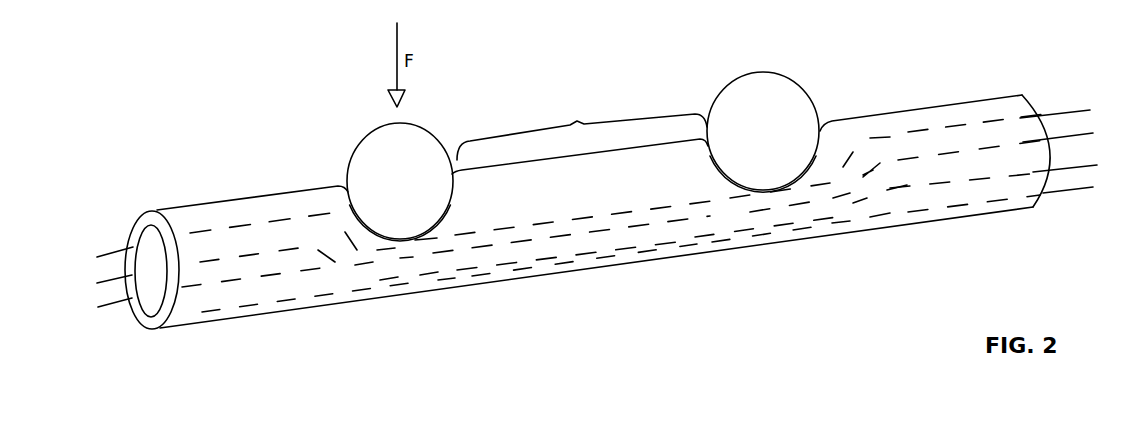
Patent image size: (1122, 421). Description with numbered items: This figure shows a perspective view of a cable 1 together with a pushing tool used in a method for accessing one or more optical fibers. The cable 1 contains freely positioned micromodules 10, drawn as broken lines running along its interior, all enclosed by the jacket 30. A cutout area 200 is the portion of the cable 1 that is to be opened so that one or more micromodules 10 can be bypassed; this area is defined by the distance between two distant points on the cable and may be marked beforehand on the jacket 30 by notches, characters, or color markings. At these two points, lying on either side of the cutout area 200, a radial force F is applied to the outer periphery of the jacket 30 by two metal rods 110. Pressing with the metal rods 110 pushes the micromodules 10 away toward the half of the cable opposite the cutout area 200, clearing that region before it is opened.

The cable 1 is at (183, 325).
The micromodules 10 is at (128, 300).
The jacket 30 is at (132, 218).
The metal rods 110 is at (365, 147).
The cutout area 200 is at (582, 126).